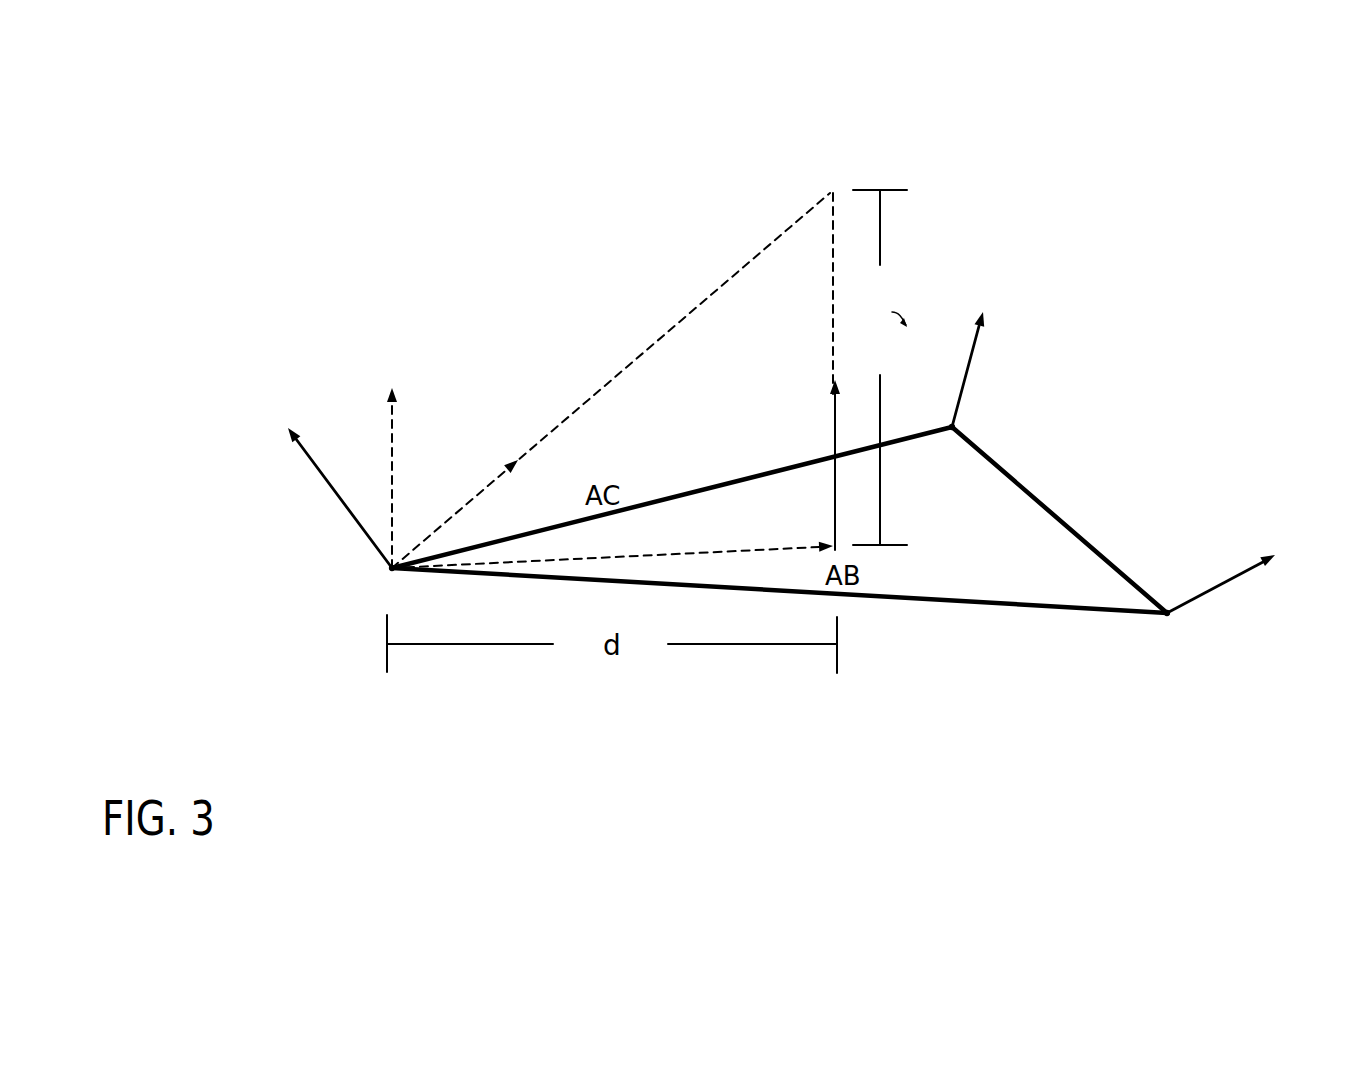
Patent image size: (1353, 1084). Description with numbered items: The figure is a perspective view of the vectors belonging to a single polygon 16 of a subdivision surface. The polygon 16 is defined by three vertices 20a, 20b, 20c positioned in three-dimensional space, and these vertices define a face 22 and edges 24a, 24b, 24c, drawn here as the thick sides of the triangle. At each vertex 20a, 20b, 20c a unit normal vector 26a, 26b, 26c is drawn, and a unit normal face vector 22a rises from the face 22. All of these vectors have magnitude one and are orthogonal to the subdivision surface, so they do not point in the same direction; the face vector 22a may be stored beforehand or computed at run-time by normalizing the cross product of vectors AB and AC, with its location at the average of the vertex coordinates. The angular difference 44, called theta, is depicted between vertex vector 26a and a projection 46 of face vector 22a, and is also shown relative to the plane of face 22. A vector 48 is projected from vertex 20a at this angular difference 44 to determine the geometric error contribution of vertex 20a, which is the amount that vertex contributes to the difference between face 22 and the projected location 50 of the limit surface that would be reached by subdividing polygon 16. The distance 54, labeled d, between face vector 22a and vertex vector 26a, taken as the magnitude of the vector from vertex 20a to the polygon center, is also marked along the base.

The polygon 16 is at (1146, 269).
The vertex 20a is at (390, 578).
The vertex 20b is at (1168, 617).
The vertex 20c is at (958, 420).
The face 22 is at (777, 555).
The face vector 22a is at (835, 428).
The edge 24a is at (920, 602).
The edge 24b is at (1045, 500).
The edge 24c is at (695, 490).
The vertex vector 26a is at (332, 490).
The vertex vector 26b is at (1255, 570).
The vertex vector 26c is at (978, 340).
The angular difference θ 44 is at (340, 402).
The projection of face vector 46 is at (395, 422).
The projected vector 48 is at (708, 297).
The projected location of the limit surface 50 is at (880, 172).
The distance d 54 is at (657, 554).